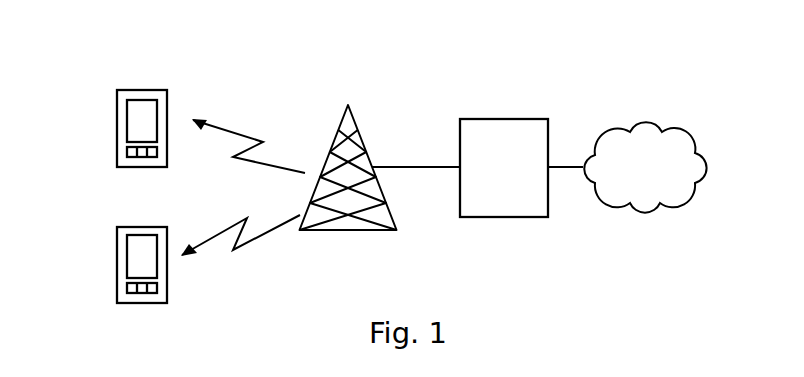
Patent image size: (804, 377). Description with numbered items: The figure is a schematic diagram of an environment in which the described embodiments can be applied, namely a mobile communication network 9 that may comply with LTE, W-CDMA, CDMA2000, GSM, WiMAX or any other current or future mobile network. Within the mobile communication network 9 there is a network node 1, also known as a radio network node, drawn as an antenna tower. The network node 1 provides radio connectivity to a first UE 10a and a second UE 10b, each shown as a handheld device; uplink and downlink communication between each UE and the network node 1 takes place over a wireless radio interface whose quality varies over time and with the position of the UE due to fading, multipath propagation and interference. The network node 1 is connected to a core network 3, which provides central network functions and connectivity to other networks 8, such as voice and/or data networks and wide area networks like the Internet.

The network node 1 is at (360, 135).
The core network 3 is at (497, 164).
The other networks 8 is at (637, 180).
The mobile communication network 9 is at (638, 80).
The first UE 10a is at (144, 90).
The second UE 10b is at (117, 258).